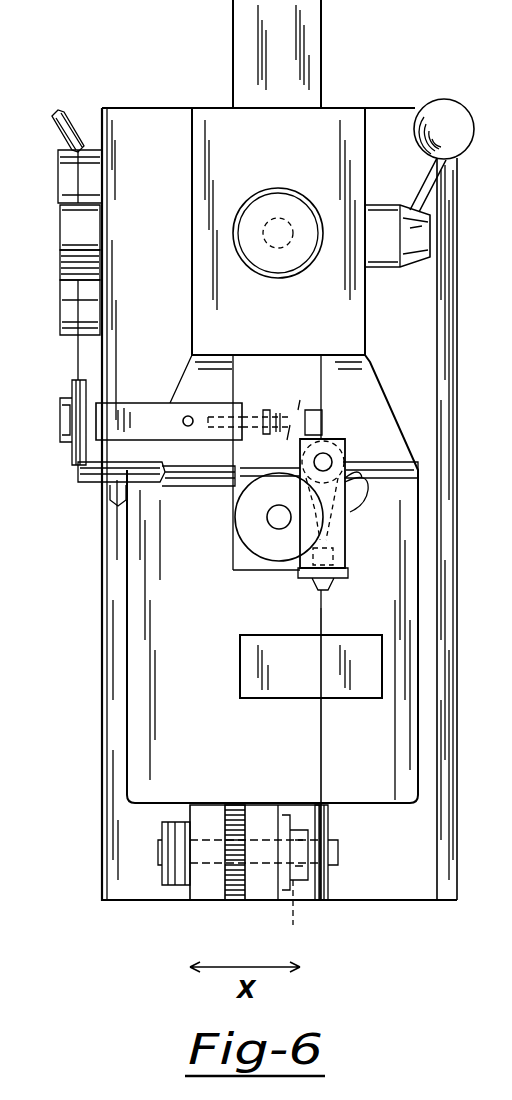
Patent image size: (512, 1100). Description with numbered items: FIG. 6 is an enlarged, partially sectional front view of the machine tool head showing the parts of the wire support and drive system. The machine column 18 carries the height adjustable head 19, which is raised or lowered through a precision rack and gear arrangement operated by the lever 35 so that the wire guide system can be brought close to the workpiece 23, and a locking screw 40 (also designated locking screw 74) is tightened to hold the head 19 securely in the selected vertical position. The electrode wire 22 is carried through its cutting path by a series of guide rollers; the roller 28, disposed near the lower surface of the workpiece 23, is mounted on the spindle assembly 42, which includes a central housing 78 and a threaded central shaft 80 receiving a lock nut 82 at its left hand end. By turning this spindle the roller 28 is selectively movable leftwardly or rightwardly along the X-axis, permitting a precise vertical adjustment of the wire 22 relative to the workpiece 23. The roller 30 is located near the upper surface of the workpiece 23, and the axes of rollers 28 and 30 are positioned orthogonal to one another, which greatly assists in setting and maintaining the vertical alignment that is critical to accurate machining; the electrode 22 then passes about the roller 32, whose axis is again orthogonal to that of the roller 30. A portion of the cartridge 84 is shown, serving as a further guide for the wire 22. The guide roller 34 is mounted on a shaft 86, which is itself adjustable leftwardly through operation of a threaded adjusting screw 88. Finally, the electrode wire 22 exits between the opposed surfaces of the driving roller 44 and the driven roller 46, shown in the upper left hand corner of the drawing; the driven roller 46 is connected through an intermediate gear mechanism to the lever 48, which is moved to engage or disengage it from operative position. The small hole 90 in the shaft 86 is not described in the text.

The machine column 18 is at (159, 103).
The height adjustable head 19 is at (322, 42).
The electrode wire 22 is at (321, 613).
The workpiece 23 is at (264, 688).
The guide roller 28 is at (333, 895).
The guide roller 30 is at (258, 545).
The guide roller 32 is at (86, 480).
The guide roller 34 is at (68, 455).
The lever 35 is at (468, 72).
The locking screw 40 is at (299, 278).
The spindle assembly 42 is at (239, 918).
The driving roller 44 is at (66, 288).
The driven roller 46 is at (68, 230).
The lever 48 is at (66, 118).
The locking screw 74 is at (290, 220).
The central housing 78 is at (258, 822).
The central shaft 80 is at (162, 850).
The lock nut 82 is at (160, 840).
The cartridge 84 is at (355, 542).
The shaft 86 is at (153, 390).
The threaded adjusting screw 88 is at (303, 390).
The hole 90 is at (188, 426).